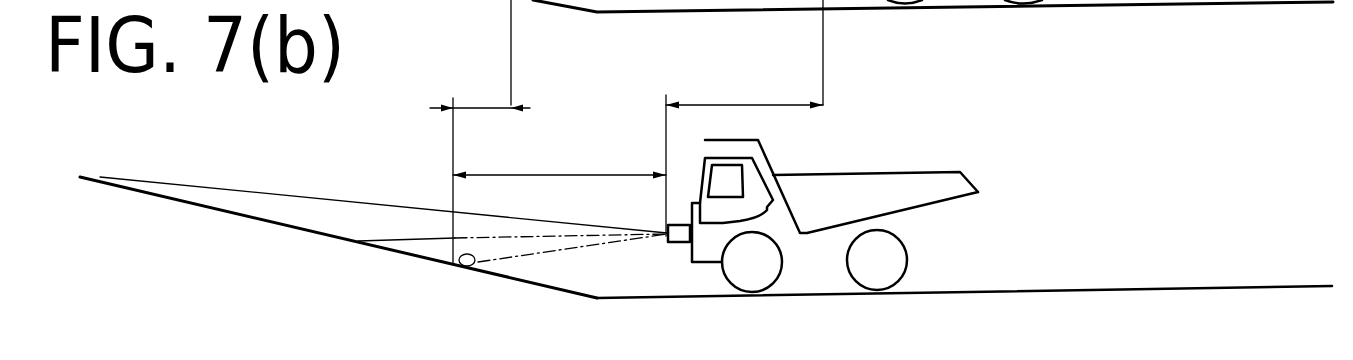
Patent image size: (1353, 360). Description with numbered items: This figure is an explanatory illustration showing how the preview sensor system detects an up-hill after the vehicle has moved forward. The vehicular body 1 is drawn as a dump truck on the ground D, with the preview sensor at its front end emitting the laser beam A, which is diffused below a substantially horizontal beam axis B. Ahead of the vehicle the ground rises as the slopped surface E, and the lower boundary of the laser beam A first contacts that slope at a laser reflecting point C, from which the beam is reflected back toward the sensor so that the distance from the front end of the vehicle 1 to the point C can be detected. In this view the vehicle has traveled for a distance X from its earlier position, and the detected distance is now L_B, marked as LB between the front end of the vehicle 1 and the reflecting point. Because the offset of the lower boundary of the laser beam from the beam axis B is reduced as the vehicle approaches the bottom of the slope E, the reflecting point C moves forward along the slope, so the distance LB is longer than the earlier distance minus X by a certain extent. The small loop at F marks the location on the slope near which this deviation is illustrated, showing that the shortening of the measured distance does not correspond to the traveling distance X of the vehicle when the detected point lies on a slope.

The vehicular body 1 is at (965, 1).
The point on the slopped surface C is at (529, 0).
The slopped surface of the ground E is at (290, 224).
The laser beam A is at (377, 205).
The beam axis B is at (424, 238).
The detection point on road surface F is at (477, 267).
The road surface D is at (1078, 287).
The distance L_B LB is at (559, 154).
The traveling distance X is at (744, 83).